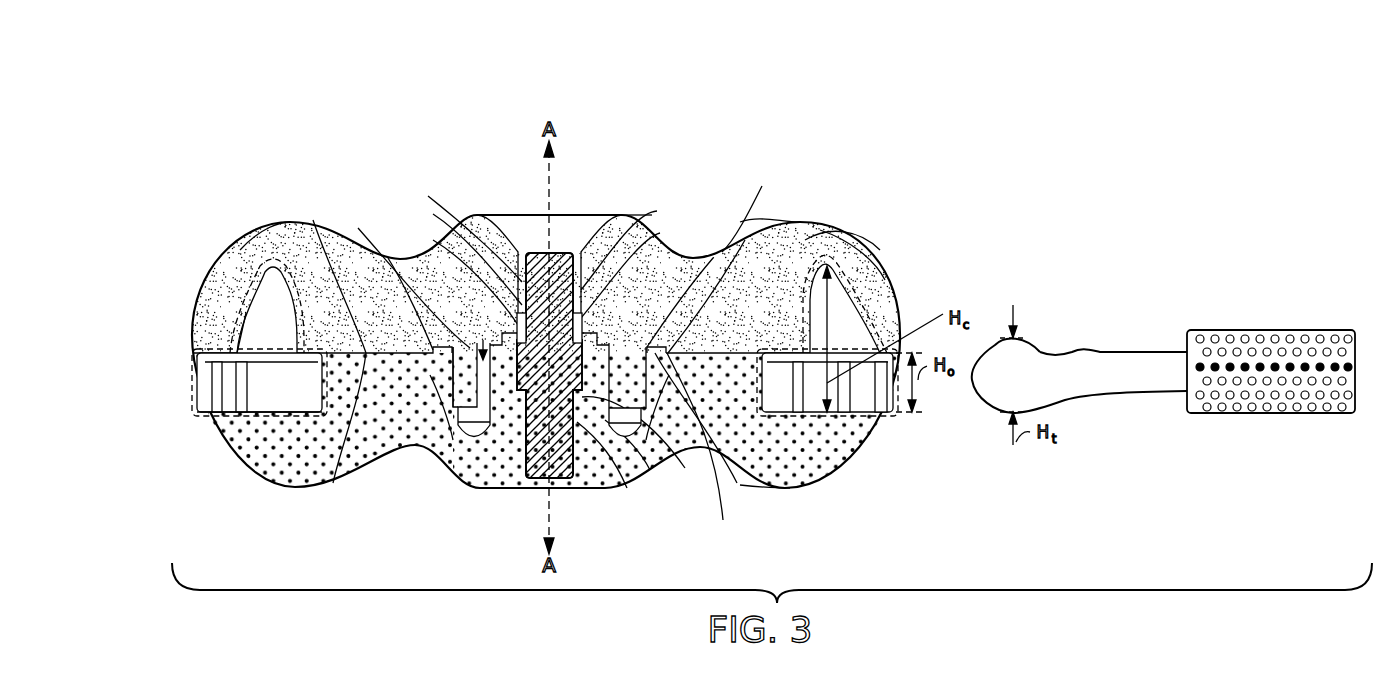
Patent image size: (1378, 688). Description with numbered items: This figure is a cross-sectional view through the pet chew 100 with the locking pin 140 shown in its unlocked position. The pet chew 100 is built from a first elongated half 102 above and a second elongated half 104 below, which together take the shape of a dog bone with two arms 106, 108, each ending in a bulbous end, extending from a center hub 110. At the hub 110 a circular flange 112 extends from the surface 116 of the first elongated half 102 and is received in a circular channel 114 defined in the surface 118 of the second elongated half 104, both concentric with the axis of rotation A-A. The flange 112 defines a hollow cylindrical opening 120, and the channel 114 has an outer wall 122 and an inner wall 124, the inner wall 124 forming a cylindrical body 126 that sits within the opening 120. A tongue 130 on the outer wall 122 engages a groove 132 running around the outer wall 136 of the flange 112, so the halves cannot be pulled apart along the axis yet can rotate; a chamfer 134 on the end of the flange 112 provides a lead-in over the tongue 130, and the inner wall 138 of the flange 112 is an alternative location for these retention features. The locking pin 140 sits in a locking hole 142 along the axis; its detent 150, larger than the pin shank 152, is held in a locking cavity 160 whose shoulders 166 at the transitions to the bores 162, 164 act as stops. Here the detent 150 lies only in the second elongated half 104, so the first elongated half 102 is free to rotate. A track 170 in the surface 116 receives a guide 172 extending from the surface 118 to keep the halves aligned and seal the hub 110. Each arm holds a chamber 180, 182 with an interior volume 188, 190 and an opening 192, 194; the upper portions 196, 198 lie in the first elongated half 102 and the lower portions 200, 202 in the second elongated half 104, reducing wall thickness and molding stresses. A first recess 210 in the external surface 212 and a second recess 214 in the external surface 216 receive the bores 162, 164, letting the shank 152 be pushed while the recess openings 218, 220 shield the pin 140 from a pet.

The pet chew 100 is at (210, 127).
The first elongated half 102 is at (259, 198).
The second elongated half 104 is at (253, 498).
The arm 106 is at (275, 222).
The arm 108 is at (855, 238).
The center hub 110 is at (652, 215).
The flange 112 is at (745, 240).
The channel 114 is at (685, 468).
The surface of first elongated half 116 is at (313, 220).
The surface of second elongated half 118 is at (336, 483).
The hollow cylindrical opening 120 is at (388, 258).
The outer wall of channel 122 is at (432, 468).
The inner wall of channel 124 is at (518, 480).
The cylindrical body 126 is at (650, 470).
The tongue 130 is at (450, 380).
The groove 132 is at (358, 228).
The chamfer 134 is at (450, 400).
The outer wall of flange 136 is at (702, 448).
The inner wall of flange 138 is at (564, 478).
The locking pin 140 is at (553, 253).
The locking hole 142 is at (428, 196).
The detent 150 is at (713, 258).
The locking pin shank 152 is at (636, 245).
The locking cavity 160 is at (461, 276).
The first bore 162 is at (463, 253).
The second bore 164 is at (608, 455).
The shoulders 166 is at (638, 270).
The track 170 is at (751, 207).
The guide 172 is at (704, 430).
The chamber 180 is at (850, 315).
The chamber 182 is at (262, 294).
The interior volume 188 is at (880, 320).
The interior volume 190 is at (200, 292).
The opening 192 is at (905, 353).
The opening 194 is at (200, 365).
The upper portion of chamber 196 is at (840, 290).
The upper portion of chamber 198 is at (246, 313).
The lower portion of chamber 200 is at (880, 405).
The lower portion of chamber 202 is at (268, 402).
The first recess 210 is at (632, 215).
The external surface of first elongated half 212 is at (783, 222).
The second recess 214 is at (583, 488).
The external surface of second elongated half 216 is at (770, 488).
The opening of recess 218 is at (496, 217).
The opening of recess 220 is at (497, 488).